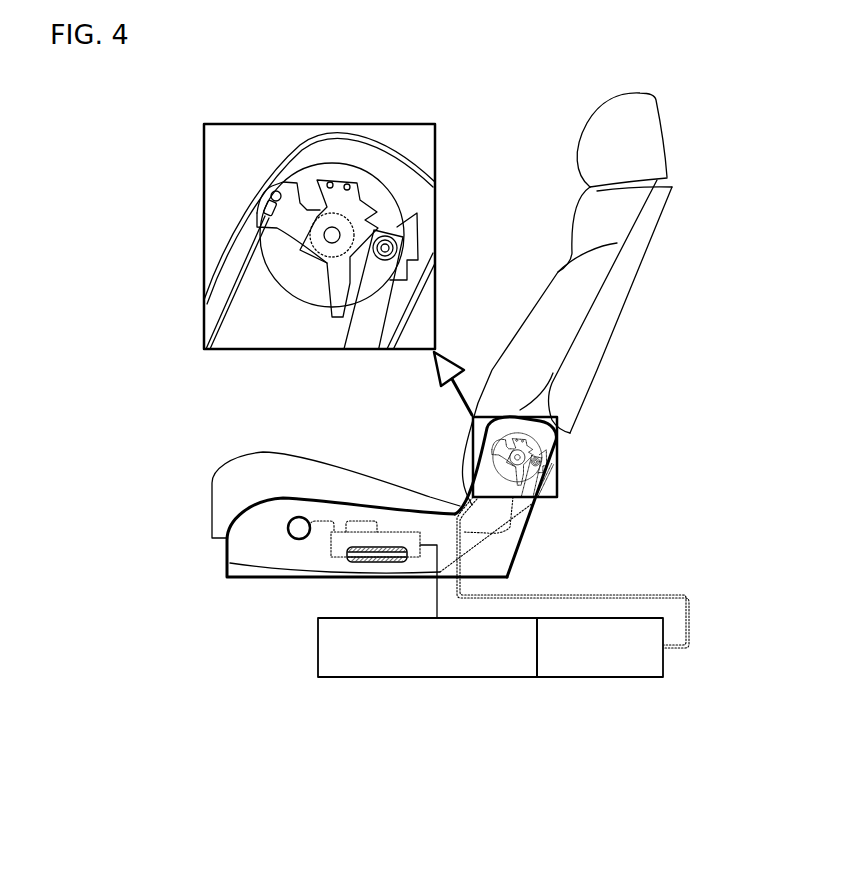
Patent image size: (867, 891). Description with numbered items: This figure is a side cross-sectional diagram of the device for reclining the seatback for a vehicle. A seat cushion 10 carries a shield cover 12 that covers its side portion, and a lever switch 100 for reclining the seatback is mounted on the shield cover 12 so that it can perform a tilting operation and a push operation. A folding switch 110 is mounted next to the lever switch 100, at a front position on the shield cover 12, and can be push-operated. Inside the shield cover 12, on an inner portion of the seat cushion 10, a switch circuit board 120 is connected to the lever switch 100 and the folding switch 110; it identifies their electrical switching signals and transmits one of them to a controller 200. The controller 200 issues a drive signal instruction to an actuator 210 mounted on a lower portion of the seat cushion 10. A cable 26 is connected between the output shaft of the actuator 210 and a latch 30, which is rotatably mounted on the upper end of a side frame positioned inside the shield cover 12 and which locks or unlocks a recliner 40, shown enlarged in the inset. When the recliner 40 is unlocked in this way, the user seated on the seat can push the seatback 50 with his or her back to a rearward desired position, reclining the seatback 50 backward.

The seat cushion 10 is at (218, 470).
The shield cover 12 is at (226, 557).
The cable 26 is at (228, 316).
The latch 30 is at (306, 187).
The recliner 40 is at (350, 160).
The seatback 50 is at (563, 287).
The lever switch 100 is at (360, 563).
The folding switch 110 is at (298, 521).
The switch circuit board 120 is at (387, 532).
The controller 200 is at (423, 677).
The actuator 210 is at (598, 677).